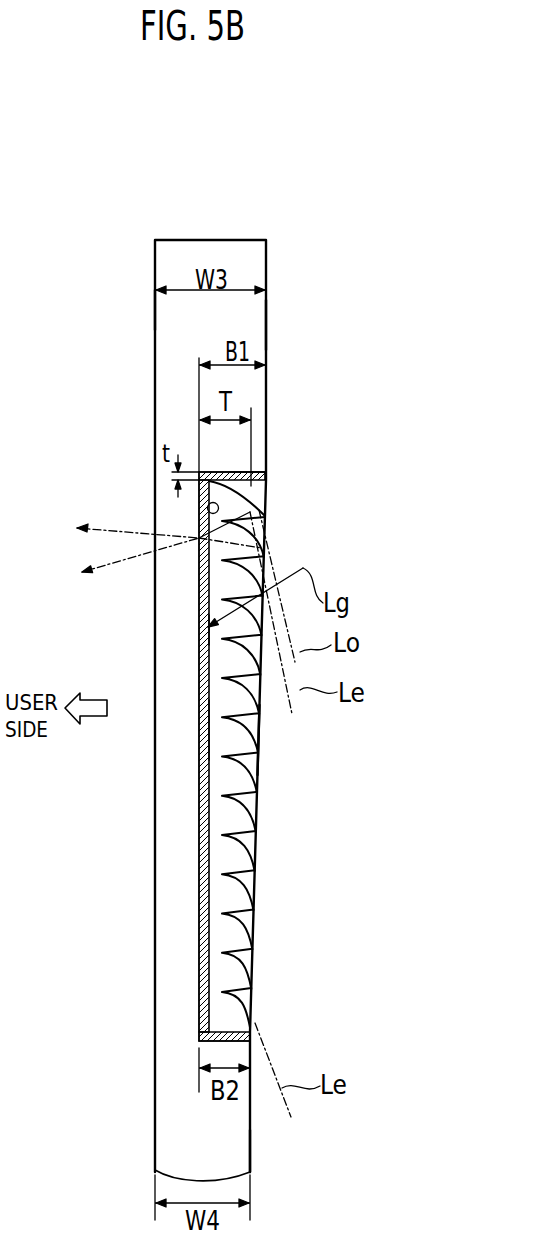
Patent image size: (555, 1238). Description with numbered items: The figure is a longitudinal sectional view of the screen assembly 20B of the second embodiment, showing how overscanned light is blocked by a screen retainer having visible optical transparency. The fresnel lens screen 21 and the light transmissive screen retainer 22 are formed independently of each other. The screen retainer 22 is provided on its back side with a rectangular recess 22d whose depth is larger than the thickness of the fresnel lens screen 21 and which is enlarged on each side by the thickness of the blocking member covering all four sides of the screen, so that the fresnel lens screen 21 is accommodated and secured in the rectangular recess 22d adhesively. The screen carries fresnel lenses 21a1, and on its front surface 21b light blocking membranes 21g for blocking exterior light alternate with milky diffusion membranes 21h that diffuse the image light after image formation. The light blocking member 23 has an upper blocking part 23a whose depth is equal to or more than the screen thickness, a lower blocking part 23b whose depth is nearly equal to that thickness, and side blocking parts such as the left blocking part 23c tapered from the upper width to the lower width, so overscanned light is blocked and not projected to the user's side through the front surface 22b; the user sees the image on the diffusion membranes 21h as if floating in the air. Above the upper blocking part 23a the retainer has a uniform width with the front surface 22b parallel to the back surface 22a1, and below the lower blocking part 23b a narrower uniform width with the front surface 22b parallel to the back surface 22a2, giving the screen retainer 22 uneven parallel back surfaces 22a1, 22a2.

The screen assembly 20B is at (192, 186).
The screen retainer 22 is at (253, 239).
The front surface 22b is at (155, 313).
The back surface 22a1 is at (266, 325).
The back surface 22a2 is at (250, 1153).
The rectangular recess 22d is at (212, 471).
The light blocking member 23 is at (267, 510).
The upper blocking part 23a is at (258, 483).
The lower blocking part 23b is at (206, 1042).
The left blocking part 23c is at (247, 729).
The fresnel lens screen 21 is at (245, 797).
The fresnel lens 21a1 is at (257, 770).
The front surface 21b is at (199, 500).
The diffusion membrane 21h is at (199, 538).
The light blocking membrane 21g is at (204, 630).